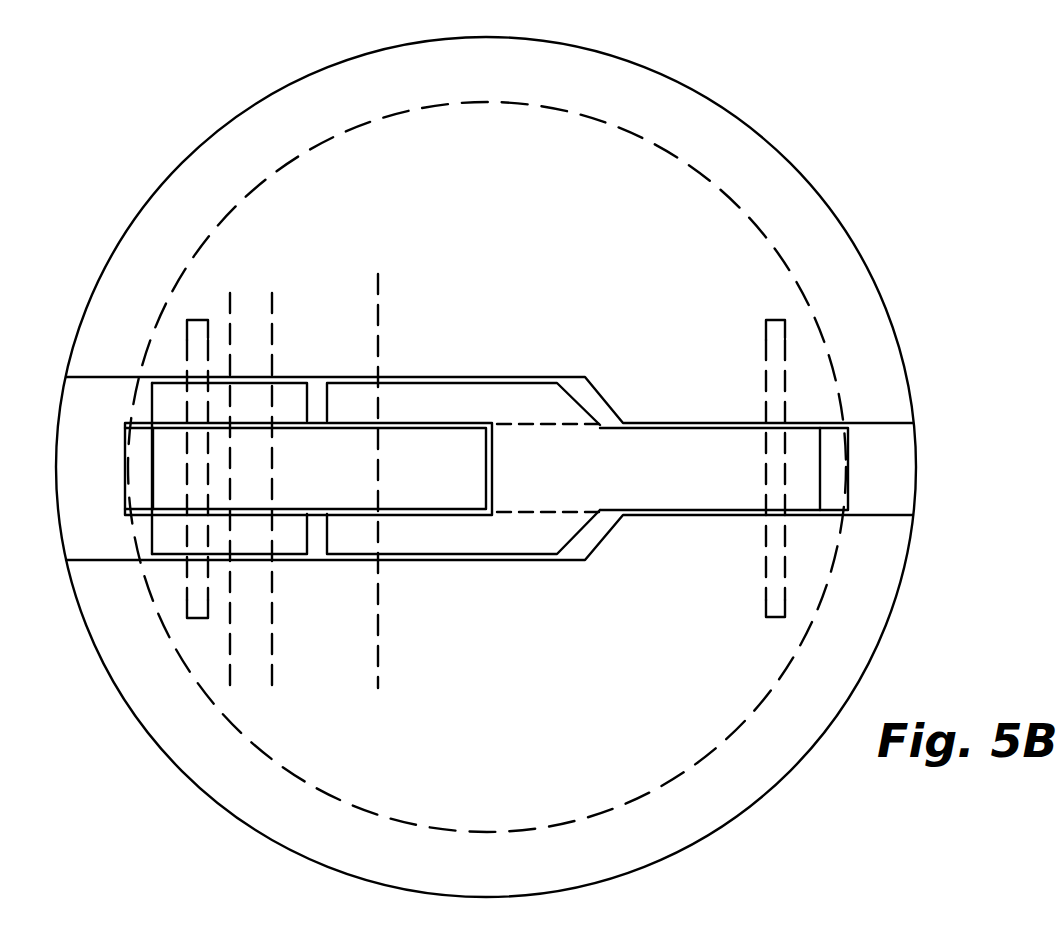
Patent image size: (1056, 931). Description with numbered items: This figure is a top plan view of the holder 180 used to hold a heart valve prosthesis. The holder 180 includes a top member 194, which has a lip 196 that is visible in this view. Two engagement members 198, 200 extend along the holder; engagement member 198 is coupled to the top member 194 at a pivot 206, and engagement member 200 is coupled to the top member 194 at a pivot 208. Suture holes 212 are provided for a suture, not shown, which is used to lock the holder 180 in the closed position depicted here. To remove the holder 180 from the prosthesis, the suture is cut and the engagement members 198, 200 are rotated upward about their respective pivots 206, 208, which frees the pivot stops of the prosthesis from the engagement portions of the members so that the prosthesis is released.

The holder 180 is at (836, 204).
The top member 194 is at (593, 150).
The lip 196 is at (752, 147).
The engagement member 198 is at (678, 457).
The engagement member 200 is at (317, 458).
The pivot 206 is at (766, 333).
The pivot 208 is at (188, 338).
The suture holes 212 is at (230, 687).